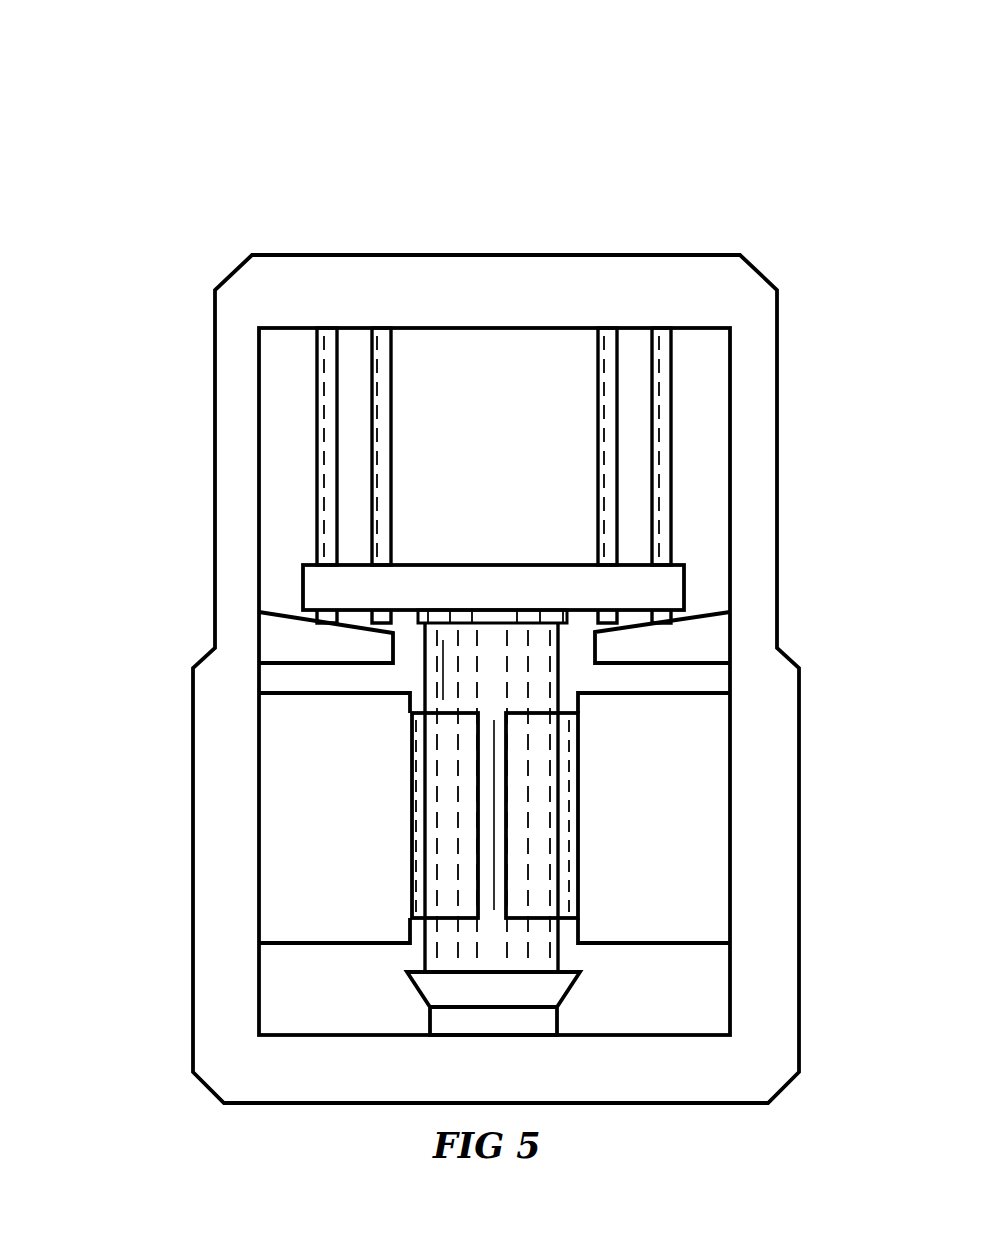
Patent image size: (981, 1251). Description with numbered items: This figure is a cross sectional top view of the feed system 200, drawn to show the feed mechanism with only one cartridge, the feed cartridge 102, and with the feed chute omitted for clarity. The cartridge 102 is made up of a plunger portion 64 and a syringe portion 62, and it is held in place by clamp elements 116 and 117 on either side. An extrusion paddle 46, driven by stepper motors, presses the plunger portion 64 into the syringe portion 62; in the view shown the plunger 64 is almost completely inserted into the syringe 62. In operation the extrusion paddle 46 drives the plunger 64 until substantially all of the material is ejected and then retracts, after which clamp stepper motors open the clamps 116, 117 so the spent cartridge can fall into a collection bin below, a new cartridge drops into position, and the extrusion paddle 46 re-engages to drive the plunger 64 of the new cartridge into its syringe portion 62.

The feed system 200 is at (222, 150).
The extrusion paddle 46 is at (675, 588).
The plunger portion 64 is at (497, 622).
The feed cartridge 102 is at (462, 652).
The clamp element 116 is at (428, 760).
The clamp element 117 is at (543, 803).
The syringe portion 62 is at (462, 951).